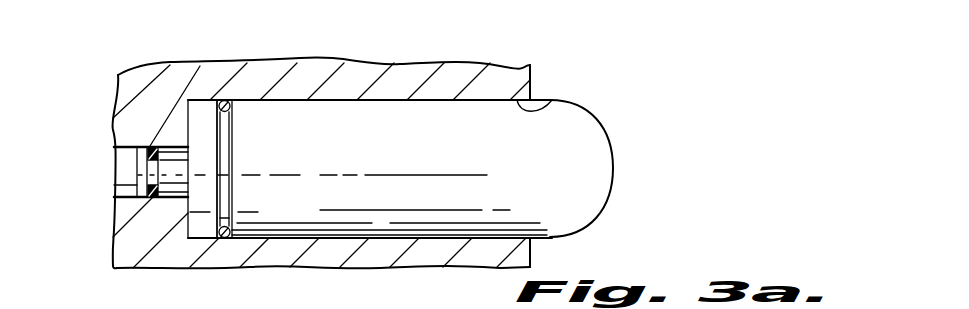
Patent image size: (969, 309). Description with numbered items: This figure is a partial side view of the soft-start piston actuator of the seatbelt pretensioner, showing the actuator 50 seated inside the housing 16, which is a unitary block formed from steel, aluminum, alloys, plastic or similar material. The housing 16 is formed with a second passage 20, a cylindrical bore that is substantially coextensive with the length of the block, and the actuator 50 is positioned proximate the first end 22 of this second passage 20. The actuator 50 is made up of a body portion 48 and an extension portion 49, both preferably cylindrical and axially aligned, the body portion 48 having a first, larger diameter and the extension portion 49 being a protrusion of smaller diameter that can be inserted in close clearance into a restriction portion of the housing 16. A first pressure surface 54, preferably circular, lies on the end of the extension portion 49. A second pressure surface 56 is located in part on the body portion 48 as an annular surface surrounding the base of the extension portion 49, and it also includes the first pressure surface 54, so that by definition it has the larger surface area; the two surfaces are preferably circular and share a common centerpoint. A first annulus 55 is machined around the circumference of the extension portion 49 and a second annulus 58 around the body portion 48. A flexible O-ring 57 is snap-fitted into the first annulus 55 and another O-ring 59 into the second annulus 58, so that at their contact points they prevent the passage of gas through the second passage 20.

The housing 16 is at (531, 92).
The second passage 20 is at (552, 98).
The first end 22 is at (200, 201).
The body portion 48 is at (507, 180).
The extension portion 49 is at (177, 168).
The actuator 50 is at (613, 187).
The first pressure surface 54 is at (137, 178).
The first annulus 55 is at (148, 162).
The second pressure surface 56 is at (189, 107).
The O-ring 57 is at (152, 147).
The second annulus 58 is at (229, 222).
The O-ring 59 is at (226, 238).